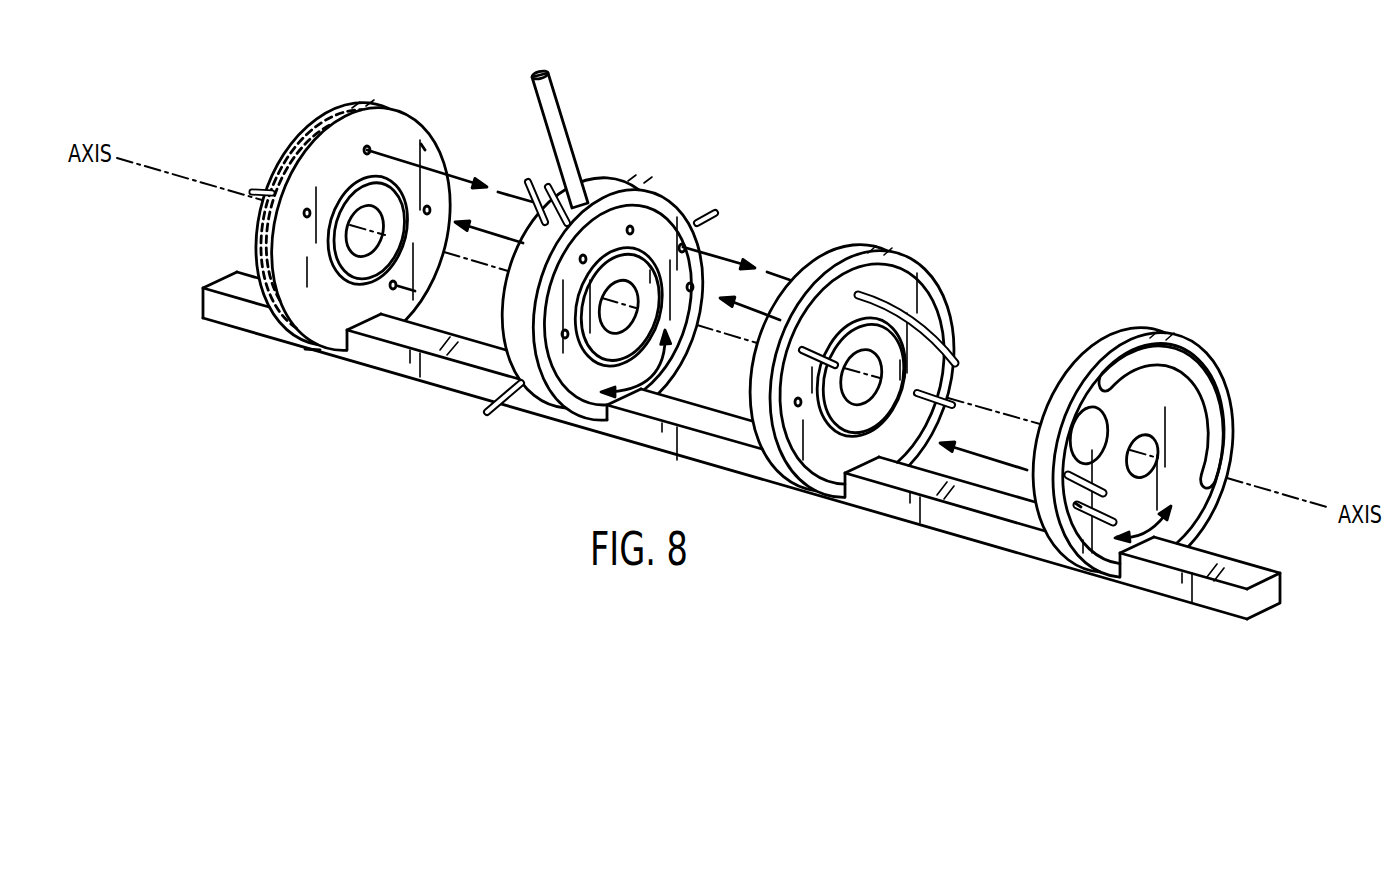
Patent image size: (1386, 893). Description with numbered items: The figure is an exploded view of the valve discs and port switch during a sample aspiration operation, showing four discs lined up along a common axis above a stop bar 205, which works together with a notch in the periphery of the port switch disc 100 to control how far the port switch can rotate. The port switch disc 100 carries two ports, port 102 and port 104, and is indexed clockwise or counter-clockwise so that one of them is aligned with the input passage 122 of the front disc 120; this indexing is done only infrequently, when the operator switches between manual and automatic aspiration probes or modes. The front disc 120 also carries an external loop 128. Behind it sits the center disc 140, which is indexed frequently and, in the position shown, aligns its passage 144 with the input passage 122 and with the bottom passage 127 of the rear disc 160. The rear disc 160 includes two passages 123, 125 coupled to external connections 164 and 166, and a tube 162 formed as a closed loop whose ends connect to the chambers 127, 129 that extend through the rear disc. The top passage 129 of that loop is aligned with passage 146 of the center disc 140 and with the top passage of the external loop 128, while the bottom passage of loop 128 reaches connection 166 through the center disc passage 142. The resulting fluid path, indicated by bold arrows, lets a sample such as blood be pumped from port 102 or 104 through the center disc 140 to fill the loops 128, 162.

The port switch disc 100 is at (1097, 352).
The port 102 is at (1095, 513).
The port 104 is at (1080, 430).
The front disc 120 is at (837, 258).
The input passage 122 is at (796, 405).
The passage 123 is at (307, 210).
The passage 125 is at (430, 211).
The bottom passage 127 is at (312, 350).
The external loop 128 is at (938, 335).
The top passage 129 is at (369, 146).
The center disc 140 is at (617, 175).
The center disc passage 142 is at (691, 291).
The passage 144 is at (566, 338).
The passage 146 is at (633, 229).
The rear disc 160 is at (347, 112).
The tube 162 is at (257, 237).
The external connection 164 is at (263, 190).
The external connection 166 is at (423, 147).
The stop bar 205 is at (382, 362).